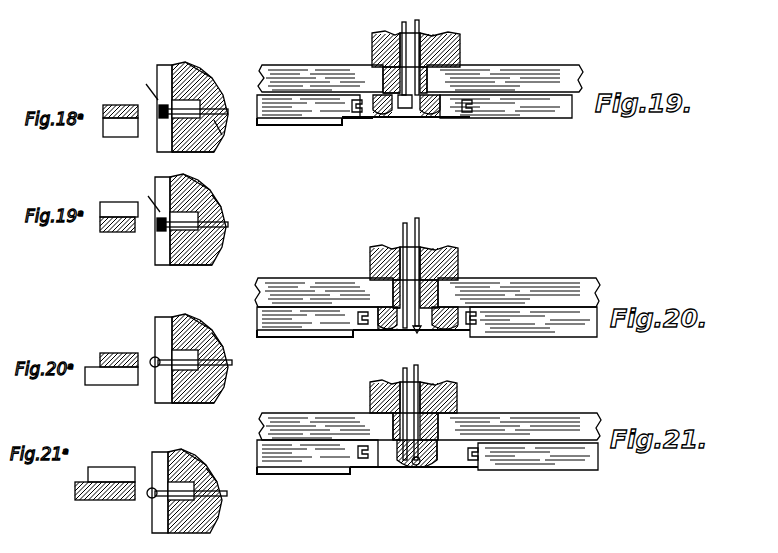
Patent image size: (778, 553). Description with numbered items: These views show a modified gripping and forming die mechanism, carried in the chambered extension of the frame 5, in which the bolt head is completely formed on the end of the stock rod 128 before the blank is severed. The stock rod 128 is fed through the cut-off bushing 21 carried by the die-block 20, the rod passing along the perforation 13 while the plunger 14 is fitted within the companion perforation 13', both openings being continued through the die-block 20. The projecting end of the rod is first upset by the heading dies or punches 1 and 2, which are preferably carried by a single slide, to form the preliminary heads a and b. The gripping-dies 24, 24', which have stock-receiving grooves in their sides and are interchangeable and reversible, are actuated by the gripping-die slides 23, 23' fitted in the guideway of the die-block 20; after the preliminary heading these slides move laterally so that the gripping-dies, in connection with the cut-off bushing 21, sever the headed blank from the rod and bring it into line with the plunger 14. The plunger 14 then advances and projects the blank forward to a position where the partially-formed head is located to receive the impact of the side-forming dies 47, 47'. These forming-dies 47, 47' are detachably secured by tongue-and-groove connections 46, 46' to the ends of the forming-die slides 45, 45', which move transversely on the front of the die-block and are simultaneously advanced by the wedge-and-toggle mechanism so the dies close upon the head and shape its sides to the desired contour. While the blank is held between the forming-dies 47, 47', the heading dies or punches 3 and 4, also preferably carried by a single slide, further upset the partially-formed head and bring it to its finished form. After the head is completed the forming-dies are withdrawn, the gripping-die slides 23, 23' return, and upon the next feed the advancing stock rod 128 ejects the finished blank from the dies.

In FIG. 18A, the heading die 1 is at (118, 104).
In FIG. 19A, the heading die 1 is at (116, 201).
In FIG. 18A, the heading die 2 is at (118, 136).
In FIG. 19A, the heading die 2 is at (118, 232).
In FIG. 21A, the heading die 3 is at (118, 468).
In FIG. 20A, the heading die 4 is at (112, 385).
In FIG. 21A, the heading die 4 is at (118, 500).
In FIG. 20A, the fifth plate 5 is at (118, 352).
In FIG. 18A, the preliminary head a is at (147, 84).
In FIG. 19A, the preliminary head b is at (149, 195).
In FIG. 19, the preliminary head b is at (405, 110).
In FIG. 18A, the perforation 13 is at (233, 132).
In FIG. 19A, the perforation 13 is at (239, 206).
In FIG. 19, the perforation 13 is at (376, 47).
In FIG. 20, the perforation 13 is at (361, 255).
In FIG. 21, the perforation 13 is at (370, 394).
In FIG. 20A, the perforation 13' is at (234, 334).
In FIG. 21A, the perforation 13' is at (223, 463).
In FIG. 19, the perforation 13' is at (455, 49).
In FIG. 20, the perforation 13' is at (445, 254).
In FIG. 21, the perforation 13' is at (451, 393).
In FIG. 20A, the plunger 14 is at (232, 362).
In FIG. 21A, the plunger 14 is at (227, 494).
In FIG. 19, the plunger 14 is at (420, 26).
In FIG. 20, the plunger 14 is at (420, 232).
In FIG. 21, the plunger 14 is at (420, 378).
In FIG. 18A, the die-block 20 is at (202, 76).
In FIG. 19A, the die-block 20 is at (200, 186).
In FIG. 20A, the die-block 20 is at (200, 313).
In FIG. 21A, the die-block 20 is at (218, 528).
In FIG. 19, the die-block 20 is at (458, 42).
In FIG. 20, the die-block 20 is at (458, 258).
In FIG. 21, the die-block 20 is at (458, 396).
In FIG. 19, the cut-off bushing 21 is at (383, 67).
In FIG. 20, the cut-off bushing 21 is at (395, 280).
In FIG. 21, the cut-off bushing 21 is at (395, 413).
In FIG. 19, the gripping-die slide 23 is at (320, 78).
In FIG. 20, the gripping-die slide 23 is at (324, 292).
In FIG. 21, the gripping-die slide 23 is at (326, 426).
In FIG. 19, the gripping-die slide 23' is at (505, 78).
In FIG. 20, the gripping-die slide 23' is at (519, 292).
In FIG. 21, the gripping-die slide 23' is at (519, 426).
In FIG. 18A, the gripping-die 24 is at (216, 153).
In FIG. 19A, the gripping-die 24 is at (200, 275).
In FIG. 20A, the gripping-die 24 is at (220, 394).
In FIG. 19, the gripping-die 24 is at (367, 113).
In FIG. 20, the gripping-die 24 is at (384, 293).
In FIG. 21, the gripping-die 24 is at (376, 475).
In FIG. 19, the gripping-die 24' is at (446, 103).
In FIG. 20, the gripping-die 24' is at (466, 293).
In FIG. 21, the gripping-die 24' is at (444, 457).
In FIG. 19, the forming-die slide 45 is at (315, 110).
In FIG. 20, the forming-die slide 45 is at (317, 322).
In FIG. 21, the forming-die slide 45 is at (317, 457).
In FIG. 19, the forming-die slide 45' is at (506, 106).
In FIG. 20, the forming-die slide 45' is at (533, 322).
In FIG. 21, the forming-die slide 45' is at (538, 456).
In FIG. 19, the tongue-and-groove connection 46 is at (328, 128).
In FIG. 20, the tongue-and-groove connection 46 is at (346, 335).
In FIG. 21, the tongue-and-groove connection 46 is at (335, 476).
In FIG. 19, the tongue-and-groove connection 46' is at (487, 128).
In FIG. 20, the tongue-and-groove connection 46' is at (487, 335).
In FIG. 21, the tongue-and-groove connection 46' is at (490, 477).
In FIG. 18A, the forming-die 47 is at (162, 133).
In FIG. 19A, the forming-die 47 is at (160, 245).
In FIG. 20A, the forming-die 47 is at (160, 382).
In FIG. 21A, the forming-die 47 is at (156, 512).
In FIG. 19, the forming-die 47 is at (381, 123).
In FIG. 20, the forming-die 47 is at (384, 333).
In FIG. 21, the forming-die 47 is at (412, 475).
In FIG. 19, the forming-die 47' is at (444, 127).
In FIG. 20, the forming-die 47' is at (443, 332).
In FIG. 21, the forming-die 47' is at (444, 483).
In FIG. 18A, the stock rod 128 is at (228, 111).
In FIG. 19A, the stock rod 128 is at (228, 225).
In FIG. 19, the stock rod 128 is at (402, 26).
In FIG. 20, the stock rod 128 is at (403, 238).
In FIG. 21, the stock rod 128 is at (403, 382).